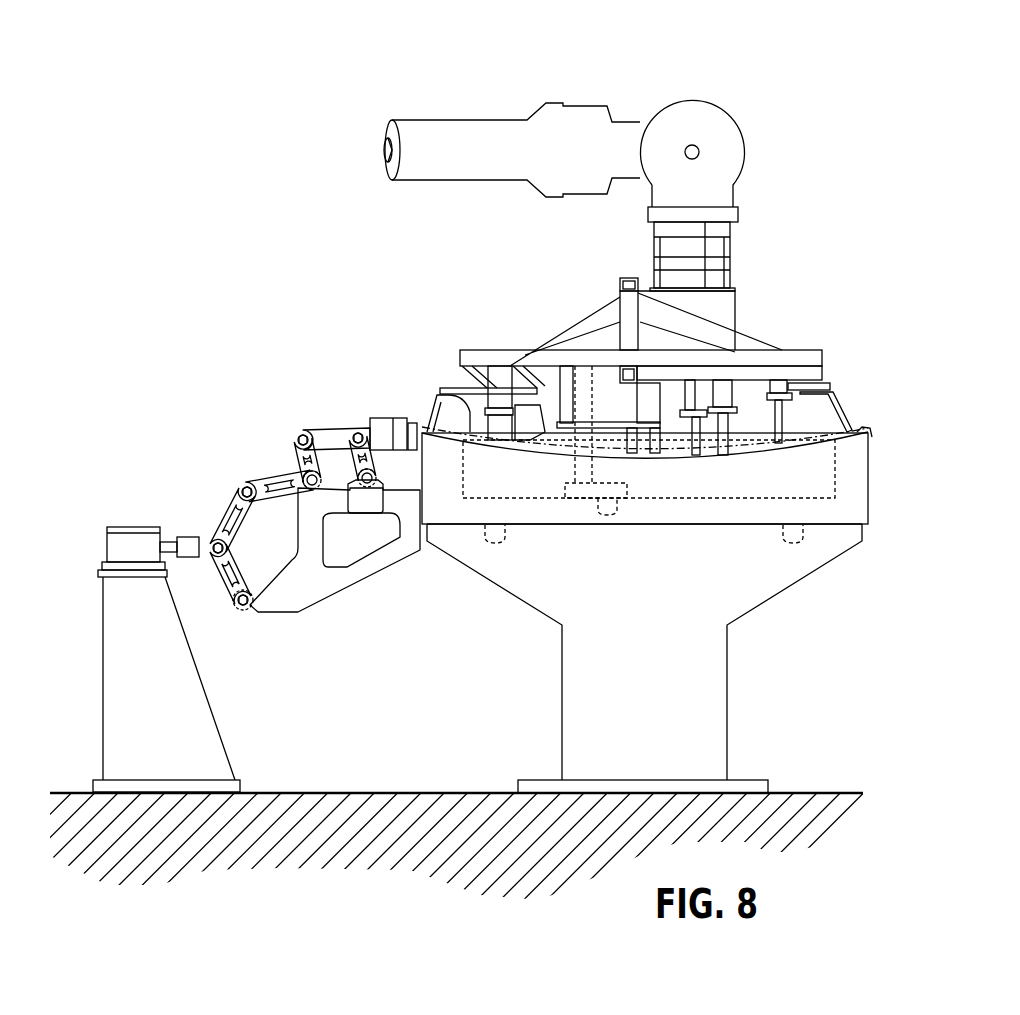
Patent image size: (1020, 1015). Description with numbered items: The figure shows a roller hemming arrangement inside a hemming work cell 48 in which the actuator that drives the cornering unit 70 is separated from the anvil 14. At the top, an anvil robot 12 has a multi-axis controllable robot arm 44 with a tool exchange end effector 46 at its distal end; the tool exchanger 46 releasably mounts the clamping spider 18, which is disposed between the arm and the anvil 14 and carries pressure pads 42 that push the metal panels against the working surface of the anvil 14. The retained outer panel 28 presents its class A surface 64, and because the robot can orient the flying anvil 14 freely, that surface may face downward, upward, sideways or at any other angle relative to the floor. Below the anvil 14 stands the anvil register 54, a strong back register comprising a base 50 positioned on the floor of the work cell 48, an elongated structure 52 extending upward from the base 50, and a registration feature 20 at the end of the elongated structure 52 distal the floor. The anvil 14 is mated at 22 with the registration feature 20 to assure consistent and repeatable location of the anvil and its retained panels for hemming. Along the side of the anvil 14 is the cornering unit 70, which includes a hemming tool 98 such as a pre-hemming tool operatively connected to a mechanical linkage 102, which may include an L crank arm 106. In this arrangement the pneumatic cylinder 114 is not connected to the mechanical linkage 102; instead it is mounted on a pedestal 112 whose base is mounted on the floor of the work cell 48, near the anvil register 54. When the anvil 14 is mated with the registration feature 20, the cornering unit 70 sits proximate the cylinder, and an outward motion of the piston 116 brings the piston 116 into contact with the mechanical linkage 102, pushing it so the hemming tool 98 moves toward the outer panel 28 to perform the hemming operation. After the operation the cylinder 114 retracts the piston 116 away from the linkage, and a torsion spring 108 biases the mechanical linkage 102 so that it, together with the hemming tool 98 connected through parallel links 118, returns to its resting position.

The hemming work cell 48 is at (214, 126).
The robot arm 44 is at (558, 100).
The anvil robot 12 is at (722, 90).
The tool exchange end effector 46 is at (740, 260).
The clamping spider 18 is at (745, 335).
The pressure pads 42 is at (848, 405).
The outer panel 28 is at (470, 415).
The class A surface 64 is at (528, 445).
The anvil 14 is at (868, 527).
The registration feature 20 is at (486, 530).
The mating location 22 is at (572, 525).
The anvil register 54 is at (540, 614).
The elongated structure 52 is at (730, 698).
The base 50 is at (748, 785).
The pedestal 112 is at (103, 645).
The pneumatic cylinder 114 is at (122, 527).
The piston 116 is at (185, 537).
The cornering unit 70 is at (240, 346).
The hemming tool 98 is at (391, 418).
The parallel links 118 is at (322, 413).
The torsion spring 108 is at (293, 450).
The L crank arm 106 is at (300, 432).
The mechanical linkage 102 is at (220, 489).